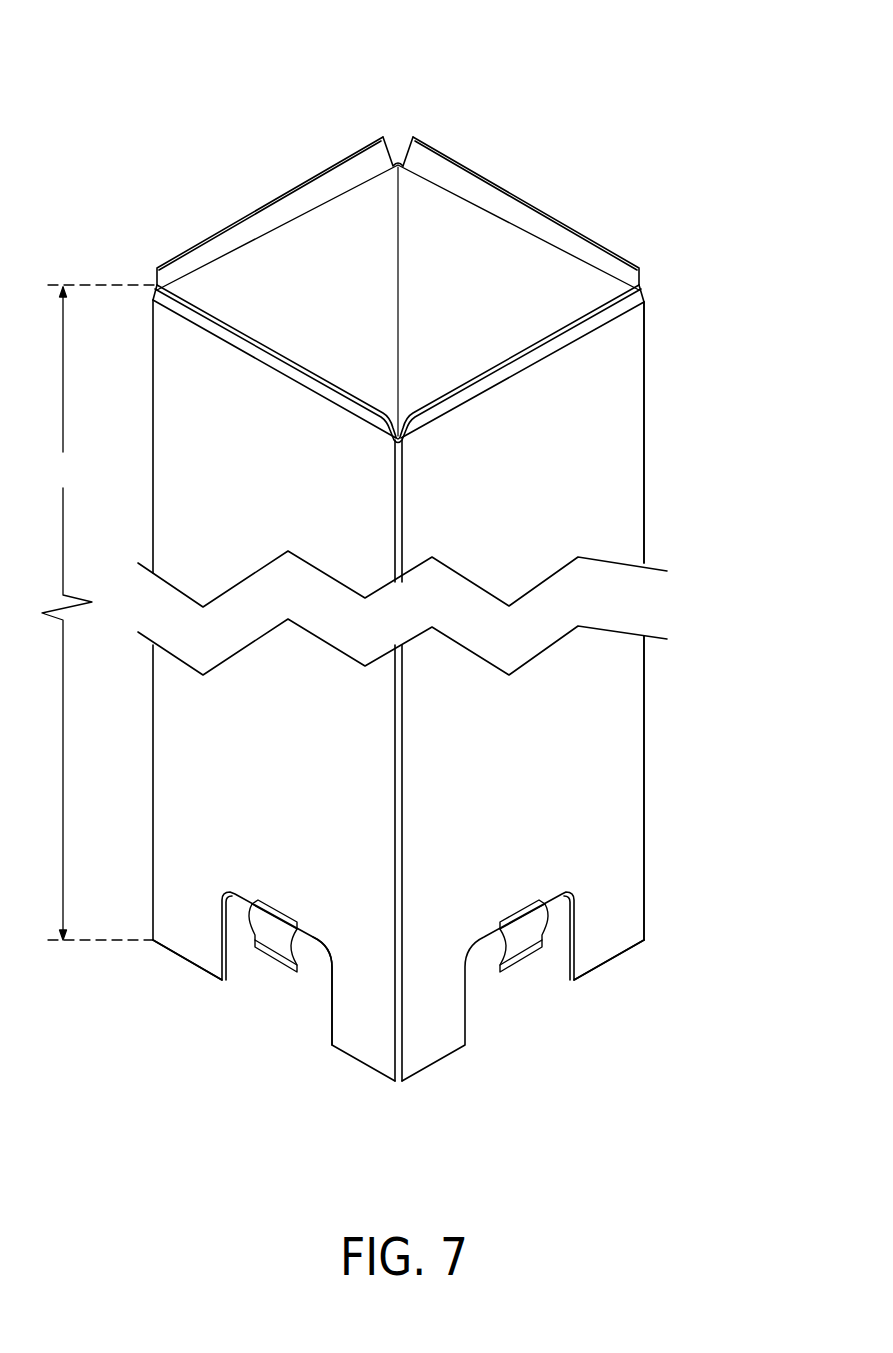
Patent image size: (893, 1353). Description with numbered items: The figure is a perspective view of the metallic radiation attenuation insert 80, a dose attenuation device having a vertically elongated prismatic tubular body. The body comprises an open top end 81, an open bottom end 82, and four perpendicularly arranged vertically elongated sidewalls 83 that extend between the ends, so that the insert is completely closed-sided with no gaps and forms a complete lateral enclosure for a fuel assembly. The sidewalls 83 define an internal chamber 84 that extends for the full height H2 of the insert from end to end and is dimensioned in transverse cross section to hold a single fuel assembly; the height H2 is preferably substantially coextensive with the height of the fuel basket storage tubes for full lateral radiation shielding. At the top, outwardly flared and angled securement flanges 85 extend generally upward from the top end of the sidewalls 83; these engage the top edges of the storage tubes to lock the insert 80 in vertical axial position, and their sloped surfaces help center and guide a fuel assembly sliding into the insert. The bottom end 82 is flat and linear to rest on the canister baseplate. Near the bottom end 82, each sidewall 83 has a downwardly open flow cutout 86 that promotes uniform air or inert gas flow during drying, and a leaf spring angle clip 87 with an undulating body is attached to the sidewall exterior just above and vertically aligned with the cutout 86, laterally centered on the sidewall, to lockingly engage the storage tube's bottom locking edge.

The radiation attenuation insert 80 is at (562, 148).
The open top end 81 is at (238, 217).
The open bottom end 82 is at (190, 972).
The sidewall 83 is at (597, 403).
The internal chamber 84 is at (500, 285).
The securement flange 85 is at (438, 148).
The flow cutout 86 is at (331, 1007).
The angle clip 87 is at (273, 970).
The height of attenuation insert H2 is at (100, 612).